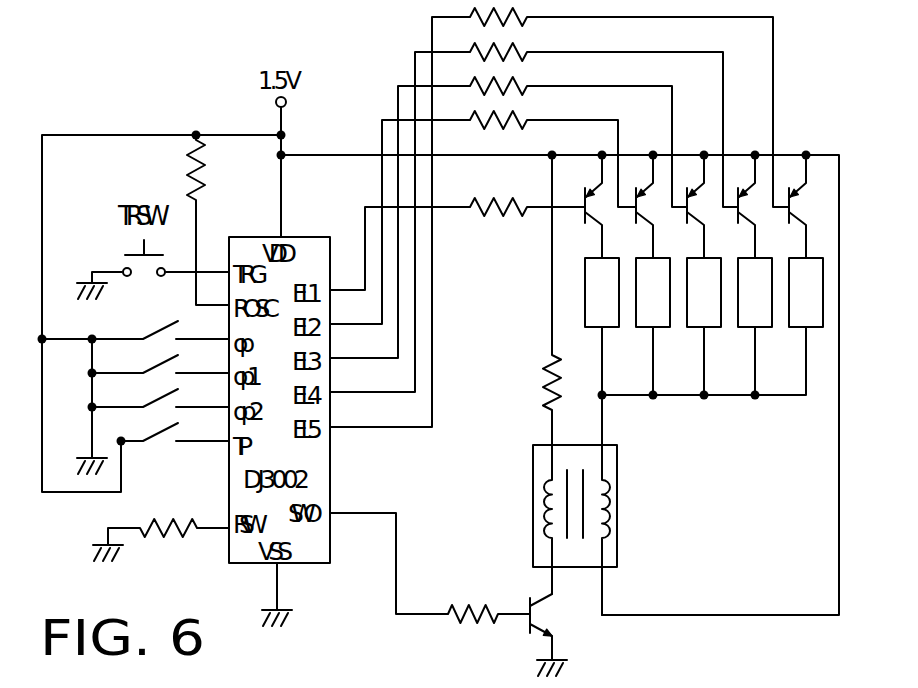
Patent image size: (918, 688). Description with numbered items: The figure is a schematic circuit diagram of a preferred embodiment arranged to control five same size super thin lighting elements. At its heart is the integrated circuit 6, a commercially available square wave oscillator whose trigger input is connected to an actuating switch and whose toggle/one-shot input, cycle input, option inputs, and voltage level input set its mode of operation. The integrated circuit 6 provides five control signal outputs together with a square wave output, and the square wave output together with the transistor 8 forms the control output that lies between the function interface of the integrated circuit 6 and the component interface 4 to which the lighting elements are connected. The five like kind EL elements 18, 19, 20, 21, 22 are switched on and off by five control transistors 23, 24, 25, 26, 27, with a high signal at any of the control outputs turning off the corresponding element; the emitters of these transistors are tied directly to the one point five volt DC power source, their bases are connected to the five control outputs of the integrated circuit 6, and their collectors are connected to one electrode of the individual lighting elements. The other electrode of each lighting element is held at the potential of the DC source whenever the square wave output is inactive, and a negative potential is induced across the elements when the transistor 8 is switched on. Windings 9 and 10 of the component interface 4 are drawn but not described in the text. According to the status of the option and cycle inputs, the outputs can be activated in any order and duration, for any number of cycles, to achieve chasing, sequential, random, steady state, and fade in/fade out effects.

The component interface 4 is at (612, 553).
The integrated circuit 6 is at (315, 550).
The transistor 8 is at (530, 628).
The primary winding 9 is at (533, 503).
The secondary winding 10 is at (612, 505).
The EL element 18 is at (606, 313).
The EL element 19 is at (660, 316).
The EL element 20 is at (713, 318).
The EL element 21 is at (757, 318).
The EL element 22 is at (812, 315).
The control transistor 23 is at (598, 205).
The control transistor 24 is at (648, 207).
The control transistor 25 is at (700, 207).
The control transistor 26 is at (752, 207).
The control transistor 27 is at (803, 207).